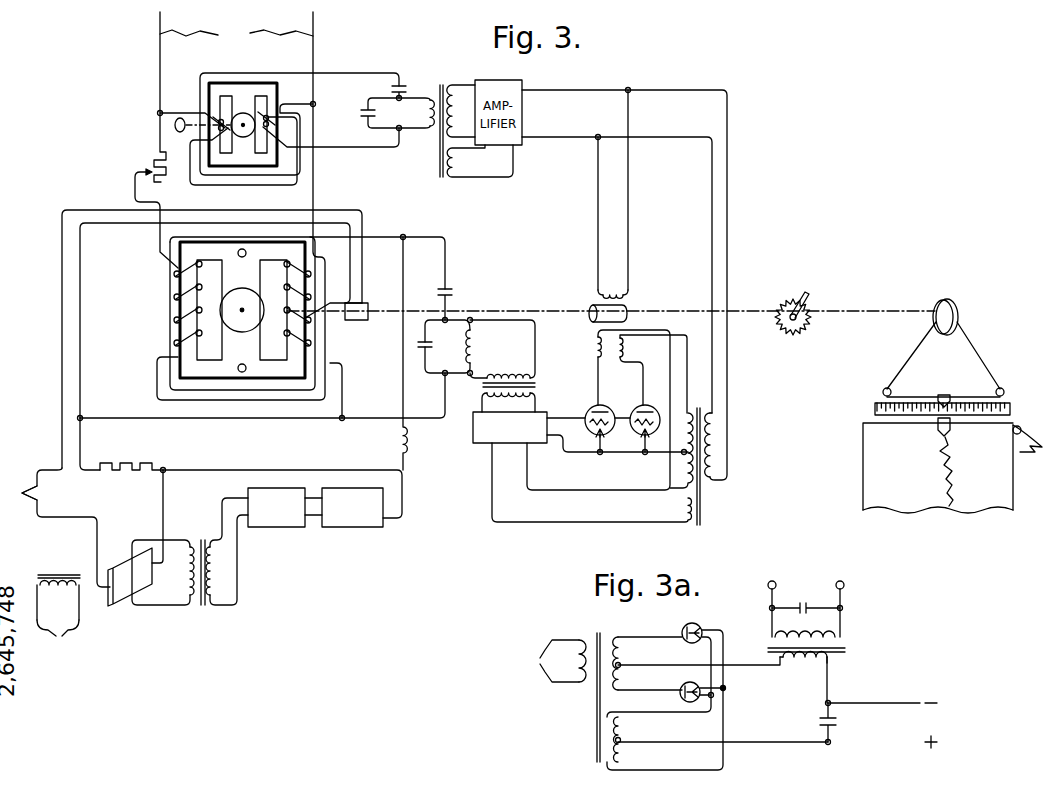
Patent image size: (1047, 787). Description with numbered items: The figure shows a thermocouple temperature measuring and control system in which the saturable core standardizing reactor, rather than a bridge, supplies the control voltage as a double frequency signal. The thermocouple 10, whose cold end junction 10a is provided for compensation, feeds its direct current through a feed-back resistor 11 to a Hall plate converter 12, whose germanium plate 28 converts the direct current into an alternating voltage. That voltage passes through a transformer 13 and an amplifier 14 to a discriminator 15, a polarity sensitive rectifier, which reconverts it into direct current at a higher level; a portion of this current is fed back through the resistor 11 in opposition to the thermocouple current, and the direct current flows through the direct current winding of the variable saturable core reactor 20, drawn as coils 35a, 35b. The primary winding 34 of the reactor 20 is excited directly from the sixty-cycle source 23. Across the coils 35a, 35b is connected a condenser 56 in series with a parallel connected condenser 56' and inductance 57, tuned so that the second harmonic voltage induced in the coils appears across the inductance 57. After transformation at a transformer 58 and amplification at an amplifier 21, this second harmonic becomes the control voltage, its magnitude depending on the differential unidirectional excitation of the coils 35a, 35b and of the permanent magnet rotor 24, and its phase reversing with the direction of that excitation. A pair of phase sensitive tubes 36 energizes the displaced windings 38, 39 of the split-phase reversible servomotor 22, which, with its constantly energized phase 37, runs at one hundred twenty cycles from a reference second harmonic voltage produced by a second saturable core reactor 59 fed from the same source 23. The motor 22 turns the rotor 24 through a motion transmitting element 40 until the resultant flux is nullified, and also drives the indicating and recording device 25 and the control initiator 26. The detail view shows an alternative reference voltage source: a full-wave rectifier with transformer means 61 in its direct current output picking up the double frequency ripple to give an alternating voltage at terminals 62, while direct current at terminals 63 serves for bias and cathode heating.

In FIG. 3, the thermocouple 10 is at (23, 486).
In FIG. 3, the cold end junction 10a is at (352, 303).
In FIG. 3, the feed-back resistor 11 is at (133, 463).
In FIG. 3, the Hall plate converter 12 is at (101, 620).
In FIG. 3, the transformer 13 is at (203, 606).
In FIG. 3, the amplifier 14 is at (280, 528).
In FIG. 3, the discriminator 15 is at (357, 528).
In FIG. 3, the variable saturable core reactor 20 is at (253, 380).
In FIG. 3, the amplifier 21 is at (488, 445).
In FIG. 3, the servomotor 22 is at (650, 308).
In FIG. 3, the alternating current source 23 is at (175, 338).
In FIG. 3A, the alternating current source 23 is at (535, 667).
In FIG. 3, the permanent magnet rotor 24 is at (223, 317).
In FIG. 3, the indicating and recording device 25 is at (955, 382).
In FIG. 3, the control initiator 26 is at (793, 337).
In FIG. 3, the Hall plate 28 is at (118, 605).
In FIG. 3, the primary winding 34 is at (306, 340).
In FIG. 3, the coil 35a is at (306, 320).
In FIG. 3, the coil 35b is at (180, 279).
In FIG. 3, the phase sensitive tubes 36 is at (630, 403).
In FIG. 3, the motor phase 37 is at (616, 290).
In FIG. 3, the motor winding 38 is at (595, 347).
In FIG. 3, the motor winding 39 is at (627, 350).
In FIG. 3, the motion transmitting element 40 is at (382, 302).
In FIG. 3, the condenser 56 is at (467, 301).
In FIG. 3, the condenser 56' is at (435, 355).
In FIG. 3, the inductance 57 is at (476, 345).
In FIG. 3, the transformer 58 is at (538, 385).
In FIG. 3, the second saturable core reactor 59 is at (256, 83).
In FIG. 3A, the transformer means 61 is at (848, 650).
In FIG. 3A, the terminals 62 is at (775, 582).
In FIG. 3A, the terminals 63 is at (900, 712).